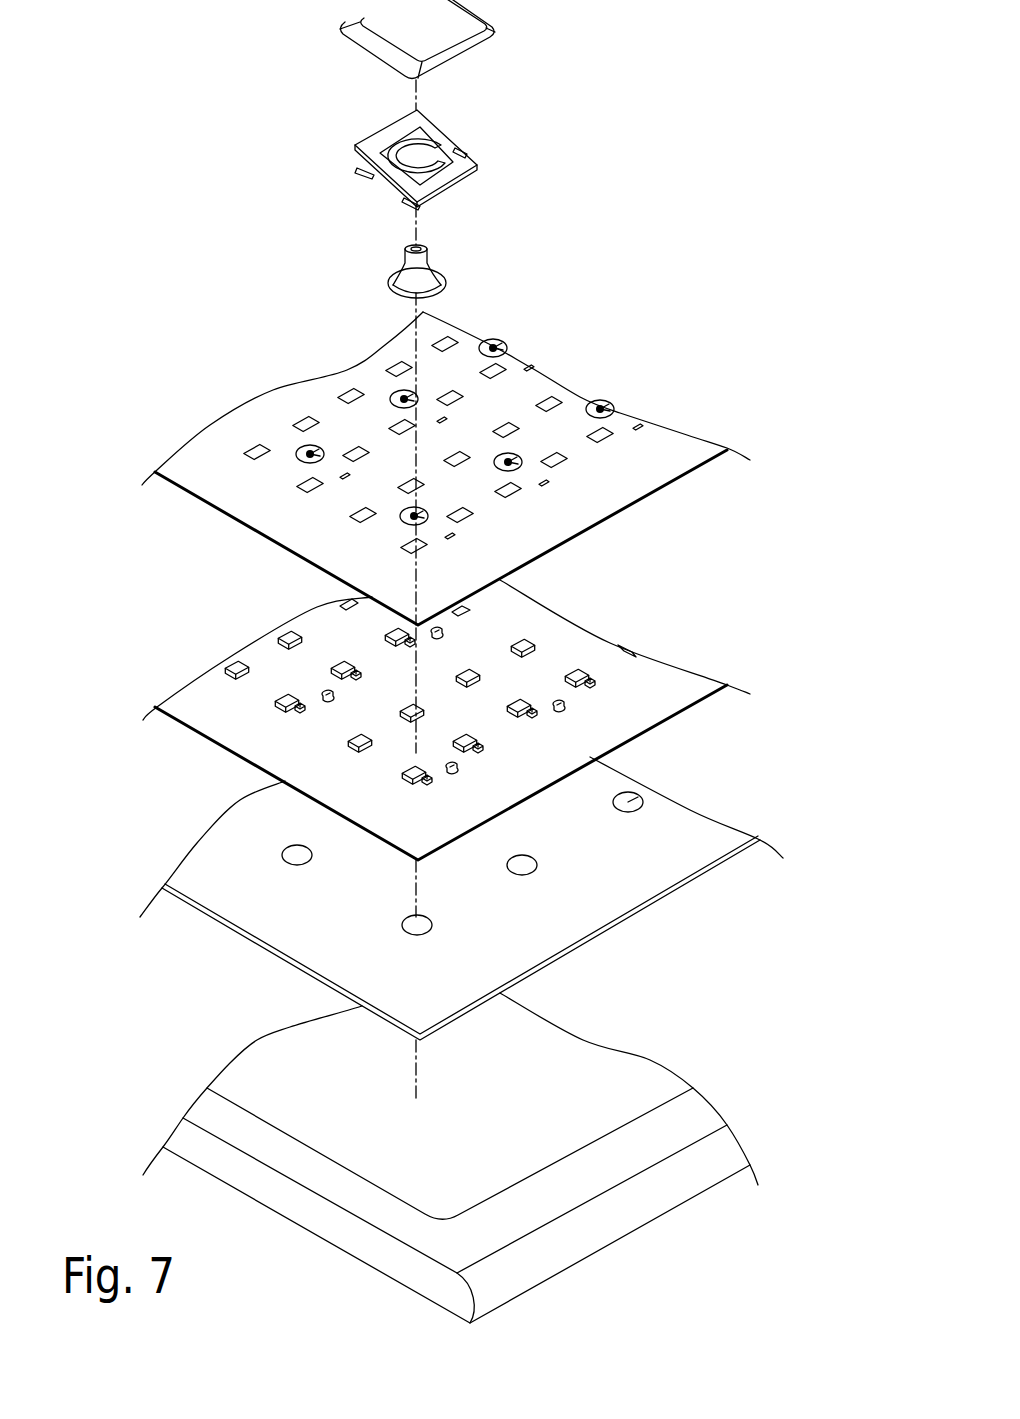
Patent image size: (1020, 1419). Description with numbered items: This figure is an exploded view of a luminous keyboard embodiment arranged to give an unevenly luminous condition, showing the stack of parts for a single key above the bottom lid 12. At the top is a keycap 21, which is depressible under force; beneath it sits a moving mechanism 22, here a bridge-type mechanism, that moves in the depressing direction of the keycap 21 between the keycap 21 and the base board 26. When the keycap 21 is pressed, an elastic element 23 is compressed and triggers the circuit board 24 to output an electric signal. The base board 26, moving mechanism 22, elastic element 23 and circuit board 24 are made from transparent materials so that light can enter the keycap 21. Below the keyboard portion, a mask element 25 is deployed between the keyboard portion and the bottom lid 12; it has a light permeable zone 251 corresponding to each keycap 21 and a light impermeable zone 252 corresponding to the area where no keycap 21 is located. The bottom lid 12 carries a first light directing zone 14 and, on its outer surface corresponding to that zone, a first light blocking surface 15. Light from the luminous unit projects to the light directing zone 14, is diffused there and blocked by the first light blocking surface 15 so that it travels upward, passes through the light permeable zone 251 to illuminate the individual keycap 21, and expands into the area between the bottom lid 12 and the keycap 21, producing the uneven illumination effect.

The keycap 21 is at (445, 38).
The moving mechanism 22 is at (442, 190).
The elastic element 23 is at (430, 282).
The circuit board 24 is at (613, 497).
The base board 26 is at (673, 678).
The mask element 25 is at (487, 898).
The light permeable zone 251 is at (667, 882).
The light impermeable zone 252 is at (628, 803).
The first light directing zone 14 is at (628, 1077).
The first light blocking surface 15 is at (620, 1208).
The bottom lid 12 is at (479, 1158).